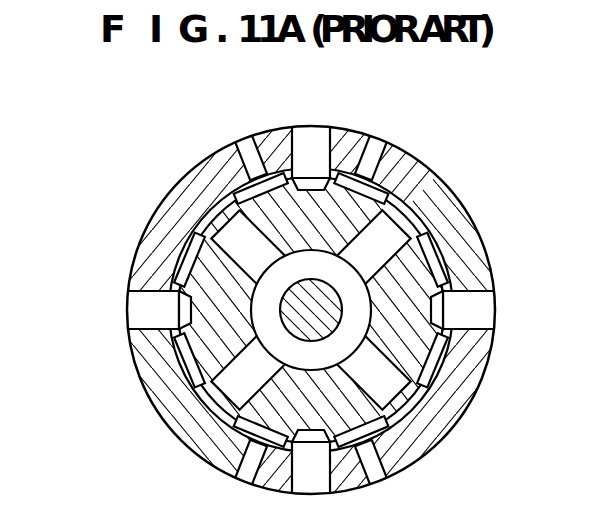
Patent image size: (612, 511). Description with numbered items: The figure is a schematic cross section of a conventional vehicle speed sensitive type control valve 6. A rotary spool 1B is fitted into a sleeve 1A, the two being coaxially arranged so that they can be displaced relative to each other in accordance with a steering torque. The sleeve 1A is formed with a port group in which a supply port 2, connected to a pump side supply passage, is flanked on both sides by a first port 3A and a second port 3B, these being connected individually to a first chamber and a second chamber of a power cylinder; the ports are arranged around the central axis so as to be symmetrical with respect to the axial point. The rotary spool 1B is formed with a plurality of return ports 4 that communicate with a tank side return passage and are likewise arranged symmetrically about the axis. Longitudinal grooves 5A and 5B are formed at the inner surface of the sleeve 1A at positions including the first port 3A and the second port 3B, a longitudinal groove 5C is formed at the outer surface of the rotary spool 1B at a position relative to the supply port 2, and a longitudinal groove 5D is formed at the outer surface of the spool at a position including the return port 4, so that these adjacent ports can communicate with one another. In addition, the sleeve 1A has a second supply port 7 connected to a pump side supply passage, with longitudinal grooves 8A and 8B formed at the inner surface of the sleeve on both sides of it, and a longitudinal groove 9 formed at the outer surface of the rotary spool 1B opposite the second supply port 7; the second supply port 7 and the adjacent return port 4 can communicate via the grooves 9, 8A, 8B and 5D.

The sleeve 1A is at (458, 207).
The rotary spool 1B is at (447, 264).
The supply port 2 is at (304, 135).
The first port 3A is at (378, 150).
The second port 3B is at (260, 140).
The return port 4 is at (235, 277).
The longitudinal groove 5A is at (395, 178).
The longitudinal groove 5B is at (262, 181).
The longitudinal groove 5C is at (327, 186).
The longitudinal groove 5D is at (190, 245).
The control valve 6 is at (133, 152).
The second supply port 7 is at (187, 313).
The longitudinal groove 8A is at (247, 257).
The longitudinal groove 8B is at (238, 421).
The longitudinal groove 9 is at (178, 352).